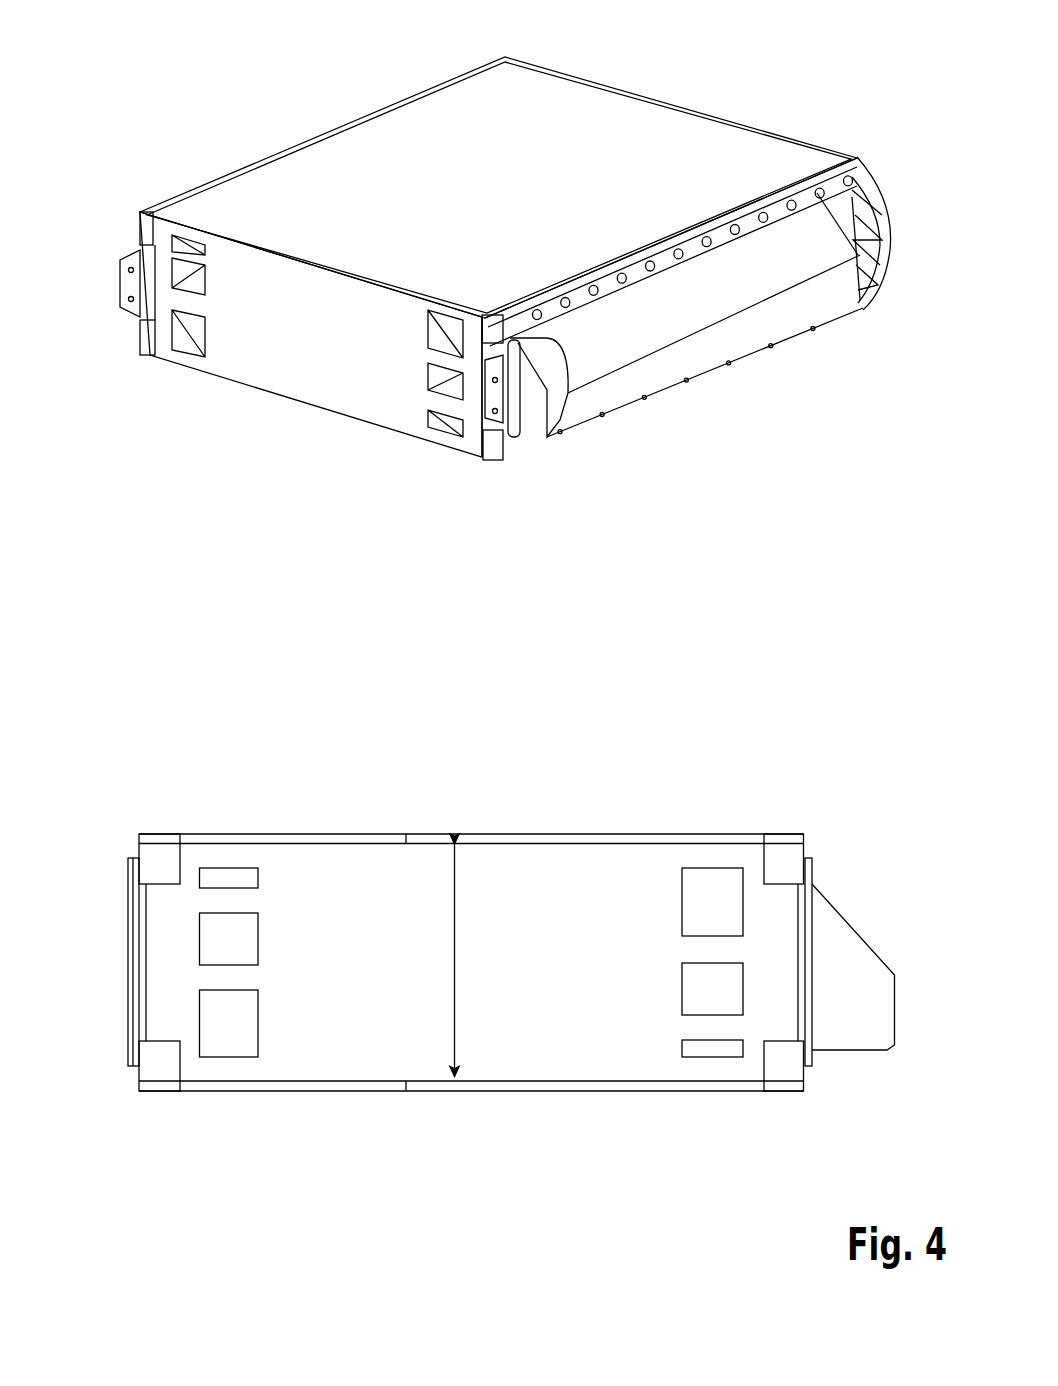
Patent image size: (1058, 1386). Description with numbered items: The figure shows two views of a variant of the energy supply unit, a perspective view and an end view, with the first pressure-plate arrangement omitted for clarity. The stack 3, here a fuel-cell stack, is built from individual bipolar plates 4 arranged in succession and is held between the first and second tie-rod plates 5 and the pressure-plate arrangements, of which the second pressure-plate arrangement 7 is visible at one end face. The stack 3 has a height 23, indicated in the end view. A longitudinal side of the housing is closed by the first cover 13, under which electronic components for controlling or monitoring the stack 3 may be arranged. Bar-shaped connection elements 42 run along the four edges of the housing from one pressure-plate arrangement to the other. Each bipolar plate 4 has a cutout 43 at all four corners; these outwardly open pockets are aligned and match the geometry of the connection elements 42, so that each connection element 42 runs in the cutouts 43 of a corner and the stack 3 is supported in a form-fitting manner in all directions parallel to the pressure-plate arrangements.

The stack 3 is at (278, 417).
The bipolar plate 4 is at (372, 357).
The tie-rod plate 5 is at (370, 138).
The second pressure-plate arrangement 7 is at (893, 266).
The first cover 13 is at (720, 346).
The height 23 is at (457, 967).
The connection element 42 is at (140, 222).
The cutout 43 is at (143, 233).